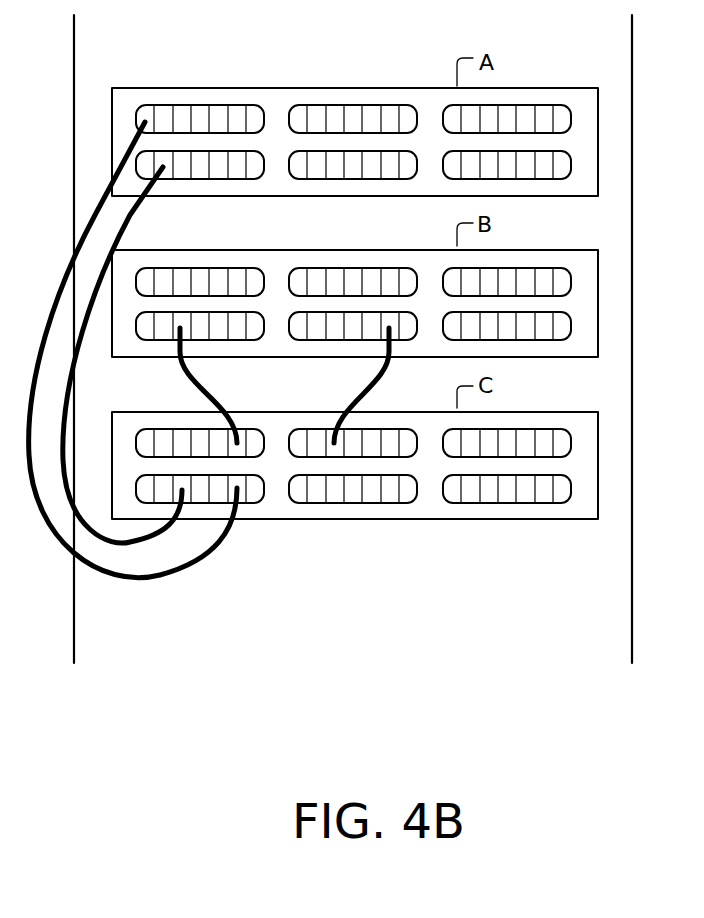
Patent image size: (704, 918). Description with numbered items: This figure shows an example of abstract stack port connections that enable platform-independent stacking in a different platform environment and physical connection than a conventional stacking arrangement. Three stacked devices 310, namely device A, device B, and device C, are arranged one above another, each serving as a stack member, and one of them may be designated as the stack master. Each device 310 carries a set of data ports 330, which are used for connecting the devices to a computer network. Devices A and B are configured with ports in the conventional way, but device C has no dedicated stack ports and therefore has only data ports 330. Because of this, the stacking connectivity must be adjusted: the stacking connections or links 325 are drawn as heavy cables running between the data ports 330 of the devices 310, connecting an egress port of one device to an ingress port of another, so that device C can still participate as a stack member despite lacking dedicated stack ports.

The stacked devices 310 is at (608, 246).
The stacking connections/links 325 is at (143, 221).
The data ports 330 is at (311, 96).